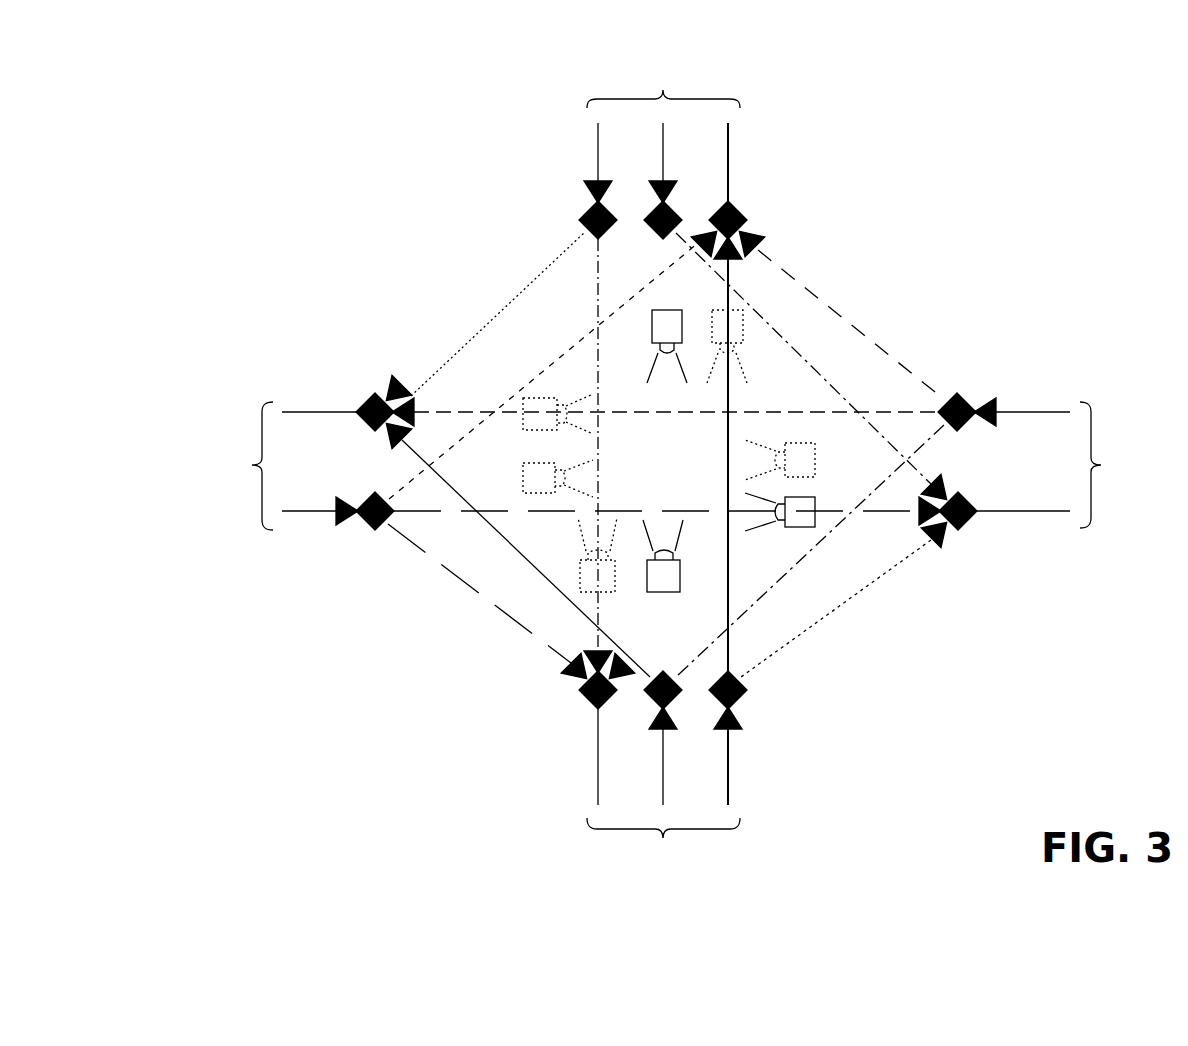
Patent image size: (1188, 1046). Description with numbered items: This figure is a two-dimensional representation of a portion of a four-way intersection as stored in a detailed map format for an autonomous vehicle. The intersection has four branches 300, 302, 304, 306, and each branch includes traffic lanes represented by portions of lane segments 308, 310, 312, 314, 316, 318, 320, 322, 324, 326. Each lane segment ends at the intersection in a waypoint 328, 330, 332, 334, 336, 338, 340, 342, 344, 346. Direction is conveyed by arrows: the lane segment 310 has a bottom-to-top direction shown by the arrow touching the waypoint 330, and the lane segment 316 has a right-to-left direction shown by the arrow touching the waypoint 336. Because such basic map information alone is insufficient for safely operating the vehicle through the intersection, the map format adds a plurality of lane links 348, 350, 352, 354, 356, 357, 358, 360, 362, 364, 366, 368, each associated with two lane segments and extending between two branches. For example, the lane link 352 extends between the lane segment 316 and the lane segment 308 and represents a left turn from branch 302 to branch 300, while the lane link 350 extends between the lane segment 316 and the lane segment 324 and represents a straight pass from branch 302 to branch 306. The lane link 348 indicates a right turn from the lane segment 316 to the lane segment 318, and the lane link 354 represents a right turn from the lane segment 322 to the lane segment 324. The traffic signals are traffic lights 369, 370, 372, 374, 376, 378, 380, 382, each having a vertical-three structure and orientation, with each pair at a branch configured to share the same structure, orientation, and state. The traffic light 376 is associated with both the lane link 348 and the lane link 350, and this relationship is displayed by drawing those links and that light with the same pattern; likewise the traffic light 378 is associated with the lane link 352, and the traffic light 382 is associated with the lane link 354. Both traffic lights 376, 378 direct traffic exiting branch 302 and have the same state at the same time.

The branch 300 is at (663, 852).
The branch 302 is at (1131, 465).
The branch 304 is at (663, 77).
The branch 306 is at (213, 466).
The lane segment 308 is at (598, 765).
The lane segment 310 is at (663, 770).
The lane segment 312 is at (728, 765).
The lane segment 314 is at (1025, 512).
The lane segment 316 is at (1030, 412).
The lane segment 318 is at (728, 148).
The lane segment 320 is at (663, 155).
The lane segment 322 is at (598, 153).
The lane segment 324 is at (318, 410).
The lane segment 326 is at (302, 510).
The waypoint 328 is at (588, 698).
The waypoint 330 is at (651, 696).
The waypoint 332 is at (745, 697).
The waypoint 334 is at (965, 525).
The waypoint 336 is at (968, 424).
The waypoint 338 is at (740, 208).
The waypoint 340 is at (683, 222).
The waypoint 342 is at (588, 212).
The waypoint 344 is at (372, 395).
The waypoint 346 is at (368, 527).
The lane link 348 is at (850, 319).
The lane link 350 is at (866, 410).
The lane link 352 is at (876, 482).
The lane link 354 is at (513, 291).
The lane link 356 is at (597, 307).
The lane link 357 is at (803, 355).
The lane link 358 is at (518, 396).
The lane link 360 is at (445, 513).
The lane link 362 is at (480, 602).
The lane link 364 is at (526, 558).
The lane link 366 is at (729, 630).
The lane link 368 is at (850, 615).
The traffic light 369 is at (790, 528).
The traffic light 370 is at (810, 444).
The traffic light 372 is at (743, 326).
The traffic light 374 is at (652, 320).
The traffic light 376 is at (522, 430).
The traffic light 378 is at (535, 463).
The traffic light 380 is at (680, 578).
The traffic light 382 is at (580, 578).